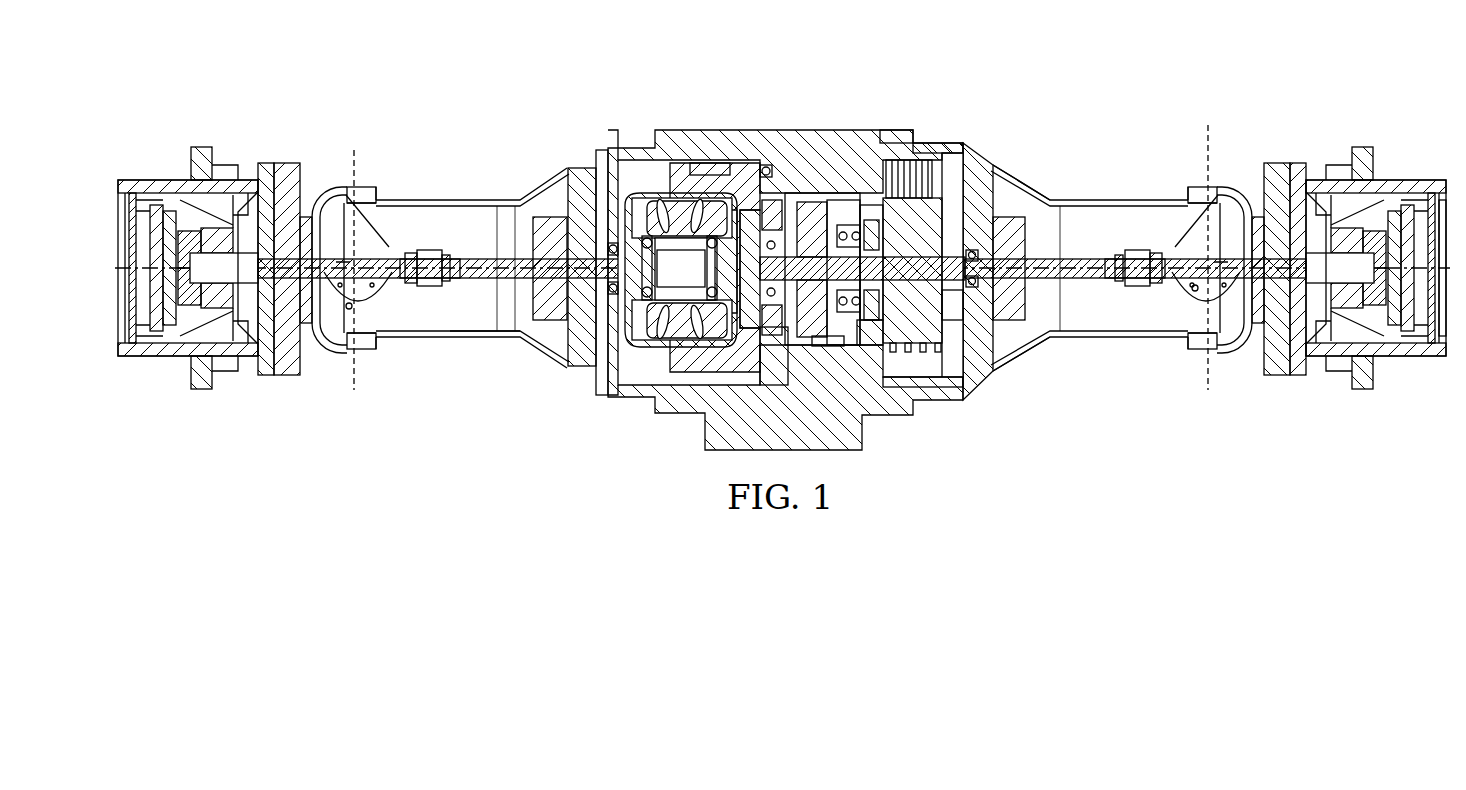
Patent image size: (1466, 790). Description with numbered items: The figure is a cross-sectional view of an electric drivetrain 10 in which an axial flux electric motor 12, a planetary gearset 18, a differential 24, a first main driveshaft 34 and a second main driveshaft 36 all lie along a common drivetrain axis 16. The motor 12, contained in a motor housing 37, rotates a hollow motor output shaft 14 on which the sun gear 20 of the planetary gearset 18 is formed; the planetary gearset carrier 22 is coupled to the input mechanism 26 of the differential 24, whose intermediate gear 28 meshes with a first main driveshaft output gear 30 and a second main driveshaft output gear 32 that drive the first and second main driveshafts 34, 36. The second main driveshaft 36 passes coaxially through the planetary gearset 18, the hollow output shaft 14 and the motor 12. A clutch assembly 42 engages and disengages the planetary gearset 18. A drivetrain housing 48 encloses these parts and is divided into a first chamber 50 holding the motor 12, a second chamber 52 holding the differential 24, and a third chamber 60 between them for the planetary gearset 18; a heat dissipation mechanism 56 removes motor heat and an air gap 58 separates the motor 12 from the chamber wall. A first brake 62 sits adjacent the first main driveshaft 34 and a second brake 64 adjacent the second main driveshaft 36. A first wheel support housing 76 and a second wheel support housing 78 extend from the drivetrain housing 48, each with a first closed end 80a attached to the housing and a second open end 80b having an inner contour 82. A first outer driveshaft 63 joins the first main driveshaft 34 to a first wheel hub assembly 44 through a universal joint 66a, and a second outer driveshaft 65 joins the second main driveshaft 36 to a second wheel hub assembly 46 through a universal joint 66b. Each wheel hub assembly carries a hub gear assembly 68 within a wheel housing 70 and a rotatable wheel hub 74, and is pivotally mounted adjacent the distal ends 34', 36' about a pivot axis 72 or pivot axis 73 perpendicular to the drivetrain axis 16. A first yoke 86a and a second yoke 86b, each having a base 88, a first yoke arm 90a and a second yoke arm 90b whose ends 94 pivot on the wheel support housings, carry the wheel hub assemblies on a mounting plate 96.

The electric drivetrain 10 is at (1107, 88).
The axial flux electric motor 12 is at (937, 355).
The hollow motor output shaft 14 is at (1018, 292).
The drivetrain axis 16 is at (1443, 195).
The planetary gearset 18 is at (823, 180).
The sun gear 20 is at (878, 238).
The planetary gearset carrier 22 is at (742, 365).
The differential 24 is at (655, 175).
The input mechanism 26 is at (725, 165).
The intermediate gear 28 is at (628, 190).
The first main driveshaft output gear 30 is at (605, 318).
The second main driveshaft output gear 32 is at (770, 178).
The first main driveshaft 34 is at (455, 243).
The distal end of first main driveshaft 34' is at (437, 318).
The second main driveshaft 36 is at (1135, 245).
The distal end of second main driveshaft 36' is at (1134, 321).
The motor housing 37 is at (972, 300).
The clutch assembly 42 is at (830, 352).
The first wheel hub assembly 44 is at (195, 405).
The second wheel hub assembly 46 is at (1355, 418).
The drivetrain housing 48 is at (928, 128).
The first chamber 50 is at (945, 178).
The second chamber 52 is at (647, 340).
The heat dissipation mechanism 56 is at (945, 148).
The air gap 58 is at (897, 370).
The third chamber 60 is at (855, 185).
The first brake 62 is at (547, 215).
The first outer driveshaft 63 is at (322, 200).
The second brake 64 is at (1020, 287).
The second outer driveshaft 65 is at (1195, 290).
The universal joint 66a is at (430, 288).
The universal joint 66b is at (1133, 255).
The hub gear assembly 68 is at (192, 237).
The wheel housing 70 is at (175, 350).
The pivot axis 72 is at (380, 175).
The pivot axis 73 is at (1198, 180).
The rotatable wheel hub 74 is at (118, 338).
The first wheel support housing 76 is at (480, 334).
The second wheel support housing 78 is at (1022, 185).
The first closed end 80a is at (527, 197).
The second open end 80b is at (375, 340).
The inner contour 82 is at (330, 347).
The first yoke 86a is at (352, 148).
The second yoke 86b is at (1243, 370).
The base 88 is at (353, 308).
The first yoke arm 90a is at (355, 388).
The second yoke arm 90b is at (370, 180).
The end 94 is at (1183, 402).
The mounting plate 96 is at (285, 170).